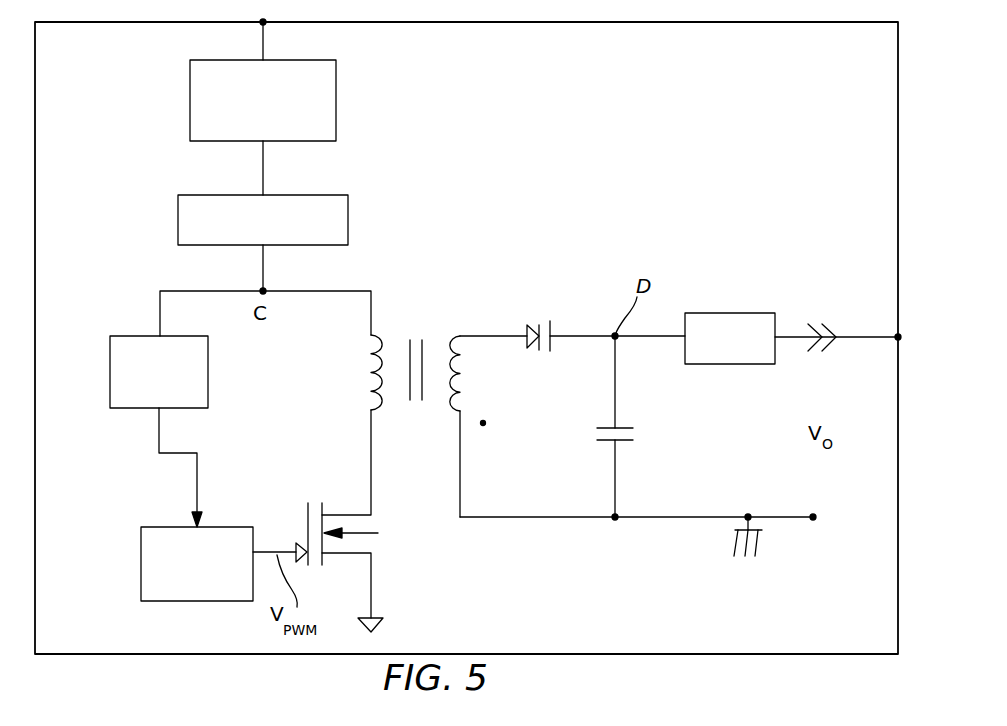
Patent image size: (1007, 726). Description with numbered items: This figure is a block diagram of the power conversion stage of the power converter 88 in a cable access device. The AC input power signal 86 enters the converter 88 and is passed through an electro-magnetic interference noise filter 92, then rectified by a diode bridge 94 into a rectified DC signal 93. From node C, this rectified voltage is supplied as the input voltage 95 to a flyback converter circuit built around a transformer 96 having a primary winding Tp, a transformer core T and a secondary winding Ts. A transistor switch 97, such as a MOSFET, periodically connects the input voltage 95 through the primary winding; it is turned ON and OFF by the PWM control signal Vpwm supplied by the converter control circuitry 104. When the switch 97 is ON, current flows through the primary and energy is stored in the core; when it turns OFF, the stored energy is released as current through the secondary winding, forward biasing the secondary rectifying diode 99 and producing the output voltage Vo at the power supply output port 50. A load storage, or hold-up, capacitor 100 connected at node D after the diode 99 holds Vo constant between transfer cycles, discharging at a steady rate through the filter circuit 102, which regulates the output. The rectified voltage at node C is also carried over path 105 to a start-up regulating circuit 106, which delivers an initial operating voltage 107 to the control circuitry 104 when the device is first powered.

The power supply output port 50 is at (897, 335).
The AC input power signal 86 is at (268, 20).
The power converter 88 is at (745, 22).
The EMI noise filter 92 is at (336, 107).
The rectified DC signal 93 is at (263, 268).
The diode bridge 94 is at (348, 228).
The input voltage 95 is at (346, 291).
The transformer 96 is at (466, 276).
The transistor switch 97 is at (422, 548).
The secondary rectifying diode 99 is at (533, 324).
The load storage capacitor 100 is at (638, 424).
The filter circuit 102 is at (719, 313).
The converter control circuitry 104 is at (233, 527).
The path 105 is at (158, 311).
The start-up regulating circuit 106 is at (108, 385).
The initial operating voltage 107 is at (158, 448).